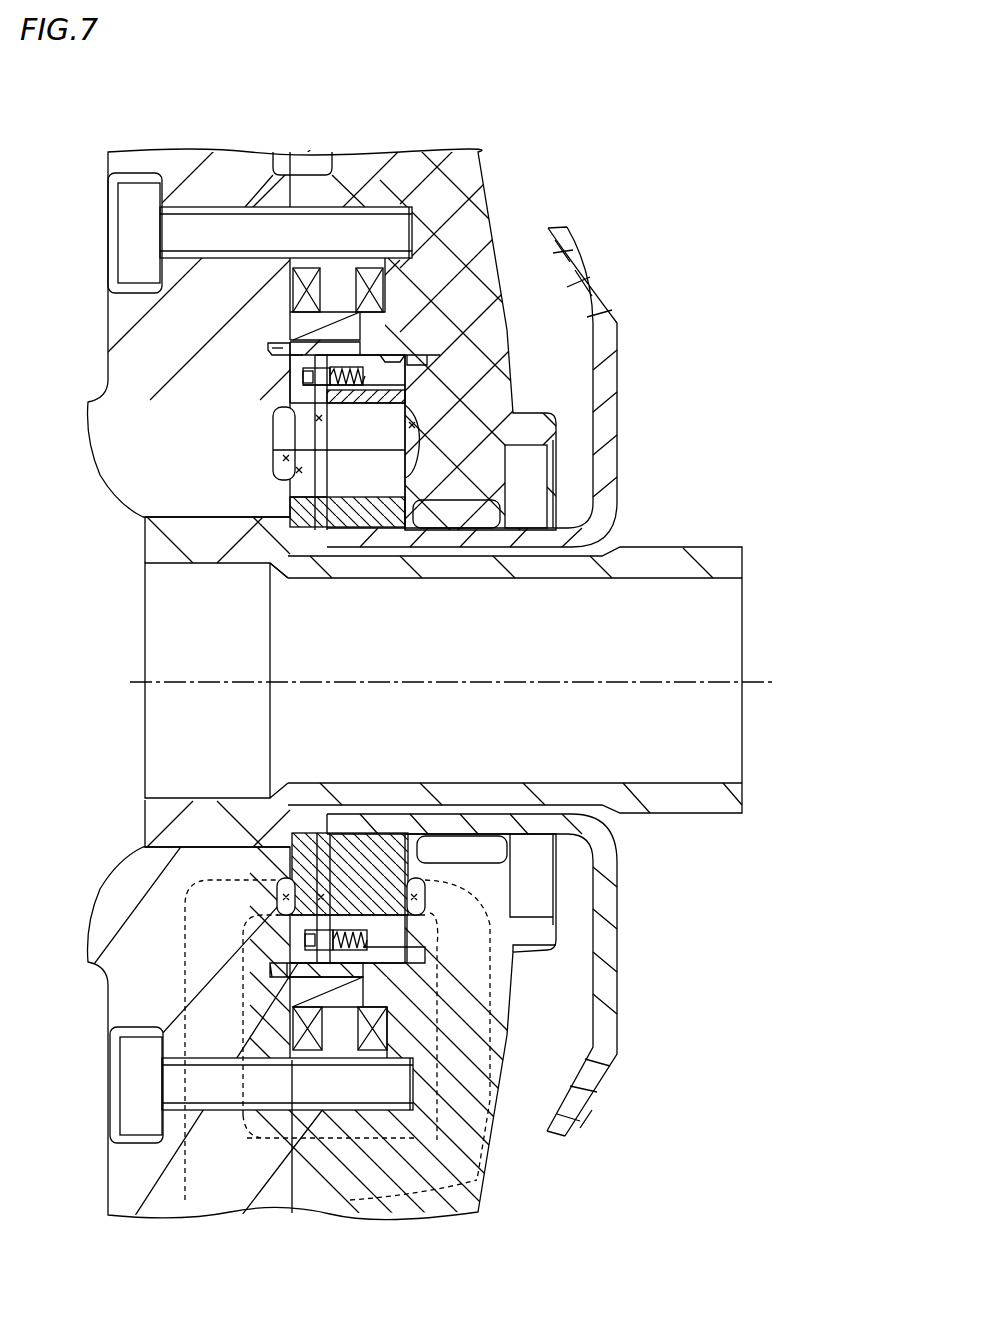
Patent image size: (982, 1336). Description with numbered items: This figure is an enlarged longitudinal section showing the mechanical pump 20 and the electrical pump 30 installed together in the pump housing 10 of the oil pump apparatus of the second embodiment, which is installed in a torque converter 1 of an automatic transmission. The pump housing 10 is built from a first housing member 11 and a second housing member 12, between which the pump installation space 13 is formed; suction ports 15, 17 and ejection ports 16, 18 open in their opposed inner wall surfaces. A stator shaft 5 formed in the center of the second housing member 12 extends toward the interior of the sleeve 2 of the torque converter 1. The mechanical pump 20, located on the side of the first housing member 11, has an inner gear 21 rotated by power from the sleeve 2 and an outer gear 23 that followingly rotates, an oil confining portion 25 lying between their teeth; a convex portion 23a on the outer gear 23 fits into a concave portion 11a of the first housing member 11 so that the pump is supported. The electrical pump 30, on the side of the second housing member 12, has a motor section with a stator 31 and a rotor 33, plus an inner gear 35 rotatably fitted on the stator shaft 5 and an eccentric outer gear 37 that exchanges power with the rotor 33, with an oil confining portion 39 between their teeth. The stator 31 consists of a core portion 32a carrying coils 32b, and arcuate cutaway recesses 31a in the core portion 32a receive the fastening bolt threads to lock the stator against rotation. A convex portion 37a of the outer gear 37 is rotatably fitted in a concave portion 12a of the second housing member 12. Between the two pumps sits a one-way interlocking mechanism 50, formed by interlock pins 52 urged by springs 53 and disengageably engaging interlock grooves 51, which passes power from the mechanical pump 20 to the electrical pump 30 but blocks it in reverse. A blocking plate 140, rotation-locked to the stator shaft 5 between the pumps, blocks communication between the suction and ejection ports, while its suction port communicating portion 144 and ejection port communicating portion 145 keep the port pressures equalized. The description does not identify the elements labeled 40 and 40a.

The torque converter 1 is at (583, 262).
The sleeve 2 is at (515, 538).
The stator shaft 5 is at (712, 545).
The pump housing 10 is at (300, 72).
The first housing member 11 is at (335, 151).
The concave portion 11a is at (588, 305).
The second housing member 12 is at (220, 151).
The concave portion 12a is at (276, 350).
The pump installation space 13 is at (395, 385).
The suction port 15 is at (514, 420).
The ejection port 16 is at (513, 967).
The suction port 17 is at (290, 475).
The ejection port 18 is at (288, 897).
The mechanical pump 20 is at (413, 428).
The inner gear 21 is at (383, 522).
The outer gear 23 is at (433, 368).
The convex portion 23a is at (428, 352).
The oil confining portion 25 is at (348, 522).
The electrical pump 30 is at (283, 460).
The stator 31 is at (561, 125).
The cutaway recess 31a is at (322, 265).
The core portion 32a is at (410, 213).
The coil 32b is at (414, 250).
The rotor 33 is at (300, 327).
The inner gear 35 is at (245, 543).
The outer gear 37 is at (318, 380).
The convex portion 37a is at (288, 345).
The oil confining portion 39 is at (292, 488).
The bearing 40 is at (300, 868).
The chamfer 40a is at (300, 560).
The one-way interlocking mechanism 50 is at (300, 380).
The interlock groove 51 is at (340, 376).
The interlock pin 52 is at (300, 383).
The spring 53 is at (345, 330).
The blocking plate 140 is at (286, 496).
The suction port communicating portion 144 is at (285, 425).
The ejection port communicating portion 145 is at (300, 965).